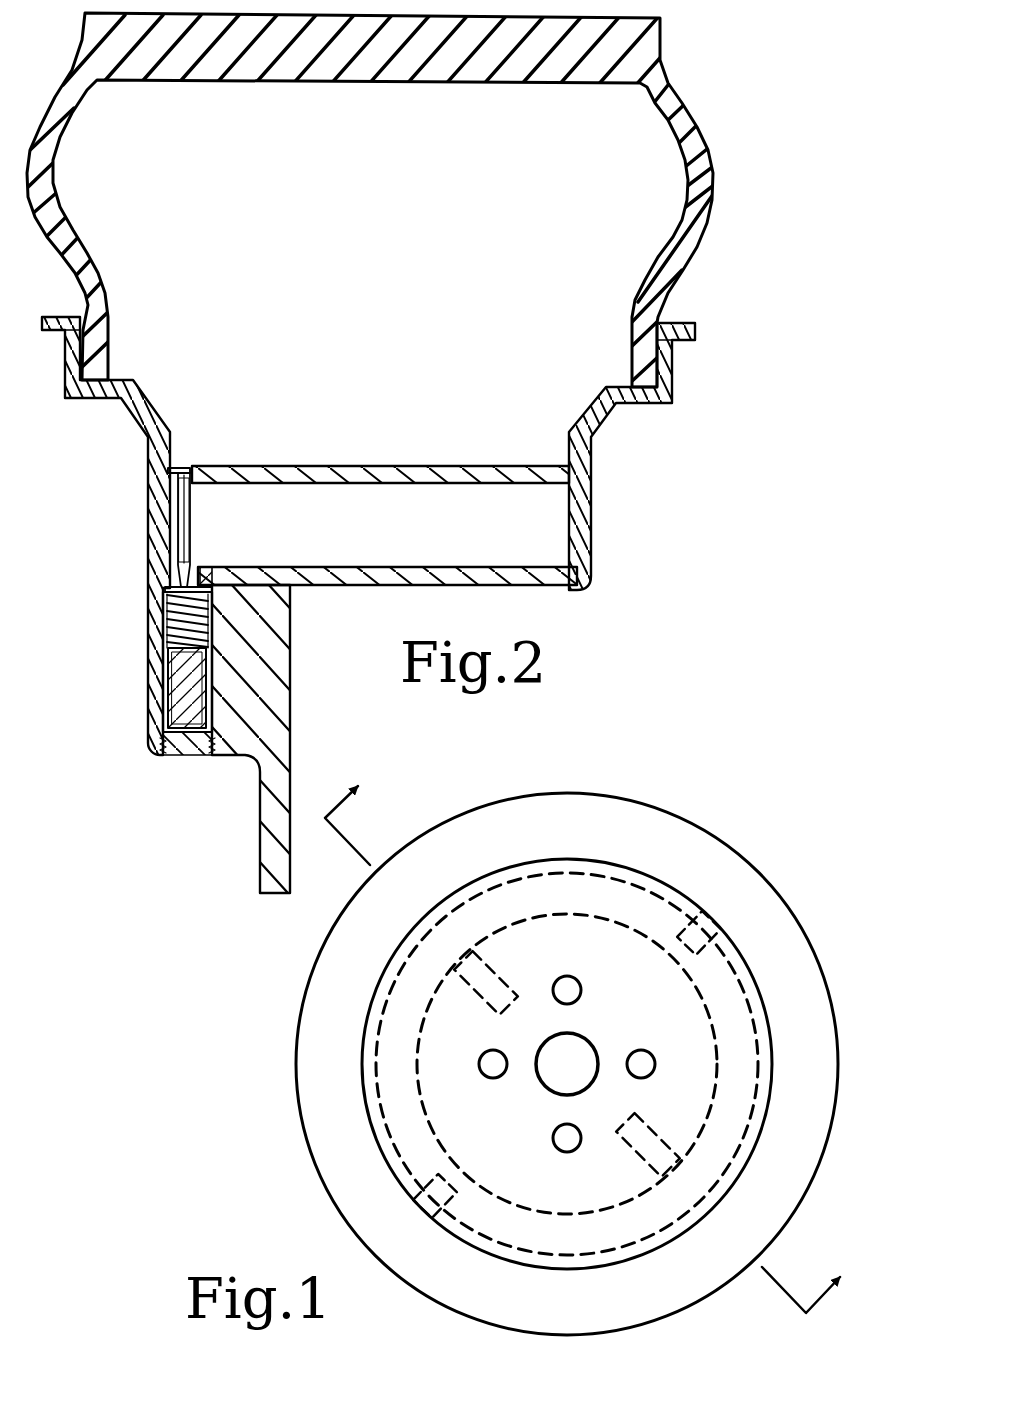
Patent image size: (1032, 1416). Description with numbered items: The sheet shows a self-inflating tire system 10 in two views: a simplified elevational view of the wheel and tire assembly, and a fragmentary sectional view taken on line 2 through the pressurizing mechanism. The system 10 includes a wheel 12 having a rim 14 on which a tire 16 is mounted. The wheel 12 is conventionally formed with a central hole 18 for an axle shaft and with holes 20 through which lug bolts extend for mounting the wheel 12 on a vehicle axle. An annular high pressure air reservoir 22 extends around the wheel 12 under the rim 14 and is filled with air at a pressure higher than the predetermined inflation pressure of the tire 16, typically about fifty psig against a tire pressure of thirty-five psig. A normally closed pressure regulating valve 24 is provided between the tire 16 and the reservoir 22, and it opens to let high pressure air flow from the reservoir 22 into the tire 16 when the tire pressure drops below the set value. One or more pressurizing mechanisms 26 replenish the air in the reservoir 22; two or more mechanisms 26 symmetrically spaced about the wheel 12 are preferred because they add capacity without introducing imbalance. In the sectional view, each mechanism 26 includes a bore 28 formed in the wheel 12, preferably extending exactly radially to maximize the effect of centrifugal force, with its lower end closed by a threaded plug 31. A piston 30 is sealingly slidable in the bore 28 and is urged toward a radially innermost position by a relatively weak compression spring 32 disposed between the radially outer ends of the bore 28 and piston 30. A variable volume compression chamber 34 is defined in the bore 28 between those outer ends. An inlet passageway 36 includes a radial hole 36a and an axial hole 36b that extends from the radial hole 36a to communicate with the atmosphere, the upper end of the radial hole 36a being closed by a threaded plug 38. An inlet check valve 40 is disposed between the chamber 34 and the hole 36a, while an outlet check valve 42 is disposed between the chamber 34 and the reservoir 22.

In FIG. 2, the self-inflating tire system 10 is at (672, 470).
In FIG. 1, the self-inflating tire system 10 is at (248, 1113).
In FIG. 2, the wheel 12 is at (582, 540).
In FIG. 1, the wheel 12 is at (755, 990).
In FIG. 2, the rim 14 is at (668, 352).
In FIG. 1, the rim 14 is at (655, 882).
In FIG. 2, the tire 16 is at (705, 181).
In FIG. 1, the tire 16 is at (600, 793).
In FIG. 1, the central hole 18 is at (543, 1086).
In FIG. 1, the holes 20 is at (584, 990).
In FIG. 2, the annular high pressure air reservoir 22 is at (400, 535).
In FIG. 1, the annular high pressure air reservoir 22 is at (720, 1017).
In FIG. 1, the pressure regulating valve 24 is at (715, 925).
In FIG. 2, the pressurizing mechanism 26 is at (86, 588).
In FIG. 1, the pressurizing mechanism 26 is at (460, 985).
In FIG. 2, the bore 28 is at (168, 681).
In FIG. 2, the piston 30 is at (200, 680).
In FIG. 2, the threaded plug 31 is at (185, 757).
In FIG. 2, the compression spring 32 is at (150, 611).
In FIG. 2, the variable volume compression chamber 34 is at (218, 622).
In FIG. 2, the inlet passageway 36 is at (125, 496).
In FIG. 2, the radial hole 36a is at (185, 512).
In FIG. 2, the axial hole 36b is at (143, 552).
In FIG. 2, the threaded plug 38 is at (185, 466).
In FIG. 2, the inlet check valve 40 is at (160, 580).
In FIG. 2, the outlet check valve 42 is at (210, 580).
In FIG. 1, the section line 2- 2 is at (595, 1039).